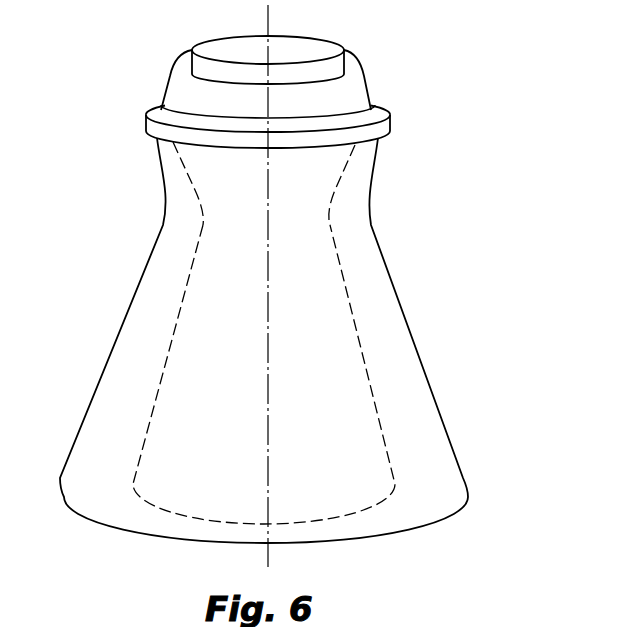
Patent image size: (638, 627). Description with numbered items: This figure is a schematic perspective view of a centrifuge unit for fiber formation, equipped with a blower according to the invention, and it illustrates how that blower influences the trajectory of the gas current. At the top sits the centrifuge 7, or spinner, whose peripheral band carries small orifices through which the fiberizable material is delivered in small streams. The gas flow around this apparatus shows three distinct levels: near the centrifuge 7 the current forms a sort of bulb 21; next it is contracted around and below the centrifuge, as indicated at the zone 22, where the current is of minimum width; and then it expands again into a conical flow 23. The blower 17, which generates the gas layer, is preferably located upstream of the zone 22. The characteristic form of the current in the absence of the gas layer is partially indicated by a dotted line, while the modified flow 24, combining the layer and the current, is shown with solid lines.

The centrifuge 7 is at (327, 68).
The bulb 21 is at (365, 85).
The blower 17 is at (377, 127).
The contracted zone 22 is at (328, 218).
The conical flow 23 is at (377, 415).
The modified flow 24 is at (462, 465).